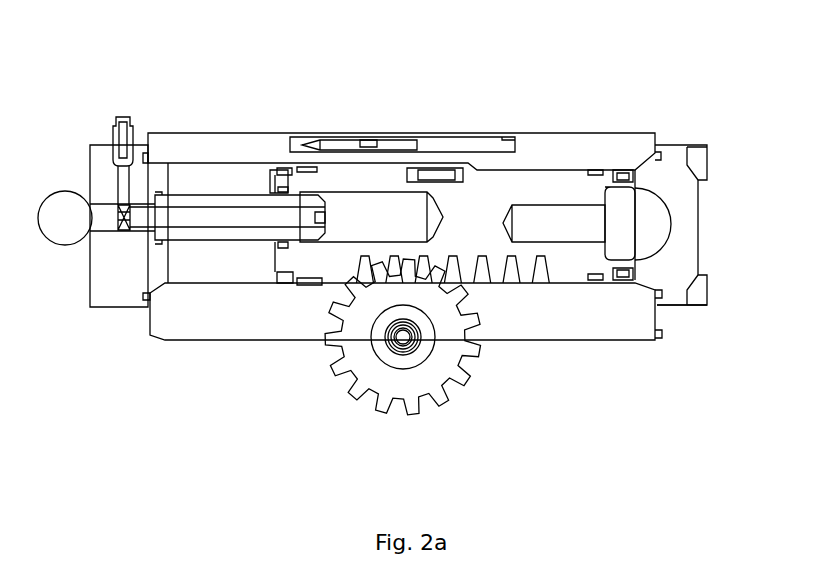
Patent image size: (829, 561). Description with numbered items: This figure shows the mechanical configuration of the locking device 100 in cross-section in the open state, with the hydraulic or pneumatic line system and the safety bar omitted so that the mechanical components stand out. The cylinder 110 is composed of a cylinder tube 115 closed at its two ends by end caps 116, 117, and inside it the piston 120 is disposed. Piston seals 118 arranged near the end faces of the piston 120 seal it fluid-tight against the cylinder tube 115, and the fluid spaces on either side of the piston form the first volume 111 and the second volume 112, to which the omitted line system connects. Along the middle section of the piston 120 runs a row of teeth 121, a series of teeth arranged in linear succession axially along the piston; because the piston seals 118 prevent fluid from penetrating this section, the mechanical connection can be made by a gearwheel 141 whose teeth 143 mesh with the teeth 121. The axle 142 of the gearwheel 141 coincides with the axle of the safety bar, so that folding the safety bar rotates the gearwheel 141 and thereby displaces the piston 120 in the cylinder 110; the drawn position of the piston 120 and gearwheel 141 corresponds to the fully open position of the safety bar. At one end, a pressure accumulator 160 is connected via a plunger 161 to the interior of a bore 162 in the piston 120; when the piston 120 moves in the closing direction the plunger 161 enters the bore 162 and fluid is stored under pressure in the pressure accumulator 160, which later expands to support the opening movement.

The locking device 100 is at (366, 80).
The cylinder 110 is at (578, 140).
The first volume 111 is at (206, 272).
The second volume 112 is at (718, 180).
The cylinder tube 115 is at (247, 147).
The end cap 116 is at (117, 300).
The end cap 117 is at (675, 300).
The piston seal 118 is at (305, 160).
The piston 120 is at (505, 200).
The row of teeth 121 is at (527, 282).
The gearwheel 141 is at (370, 375).
The axle 142 is at (400, 345).
The teeth 143 is at (440, 377).
The pressure accumulator 160 is at (72, 192).
The plunger 161 is at (183, 200).
The bore 162 is at (393, 150).